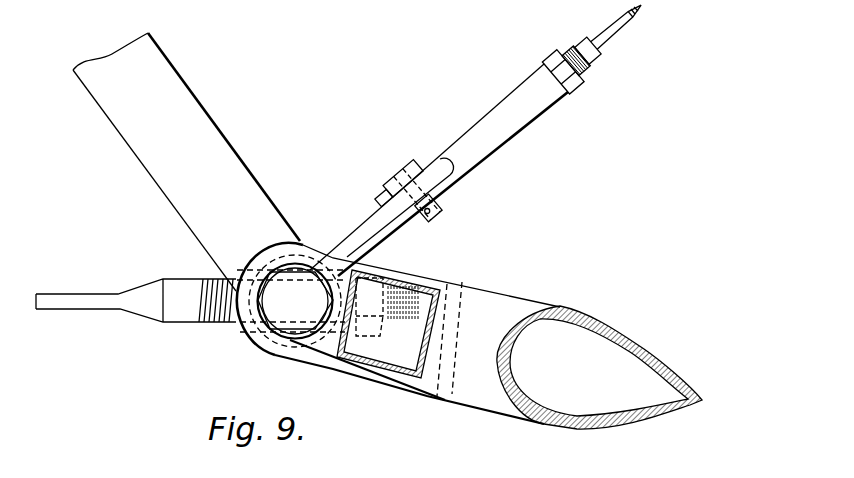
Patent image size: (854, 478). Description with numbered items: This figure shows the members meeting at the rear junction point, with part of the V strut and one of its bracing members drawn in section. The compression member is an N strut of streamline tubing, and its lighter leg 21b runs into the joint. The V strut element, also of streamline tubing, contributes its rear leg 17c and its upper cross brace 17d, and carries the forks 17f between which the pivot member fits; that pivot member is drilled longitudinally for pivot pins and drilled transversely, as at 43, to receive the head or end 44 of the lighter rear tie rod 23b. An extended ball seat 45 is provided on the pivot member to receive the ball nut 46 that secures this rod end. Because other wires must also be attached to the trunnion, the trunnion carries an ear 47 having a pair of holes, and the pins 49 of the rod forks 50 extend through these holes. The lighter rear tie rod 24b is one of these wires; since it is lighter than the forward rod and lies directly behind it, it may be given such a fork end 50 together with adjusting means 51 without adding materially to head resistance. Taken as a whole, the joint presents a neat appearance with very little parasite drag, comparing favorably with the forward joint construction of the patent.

The leg 21b is at (186, 162).
The rear rod 23b is at (54, 292).
The head or end of rod 44 is at (213, 324).
The forks 17f is at (312, 242).
The transverse drilling 43 is at (237, 280).
The rear leg 17c is at (525, 279).
The upper cross brace 17d is at (438, 396).
The ball nut 46 is at (377, 337).
The extended ball seat 45 is at (349, 374).
The rear tie rod 24b is at (638, 13).
The ear 47 is at (362, 227).
The pins 49 is at (399, 178).
The rod forks 50 is at (444, 193).
The adjusting means 51 is at (587, 72).